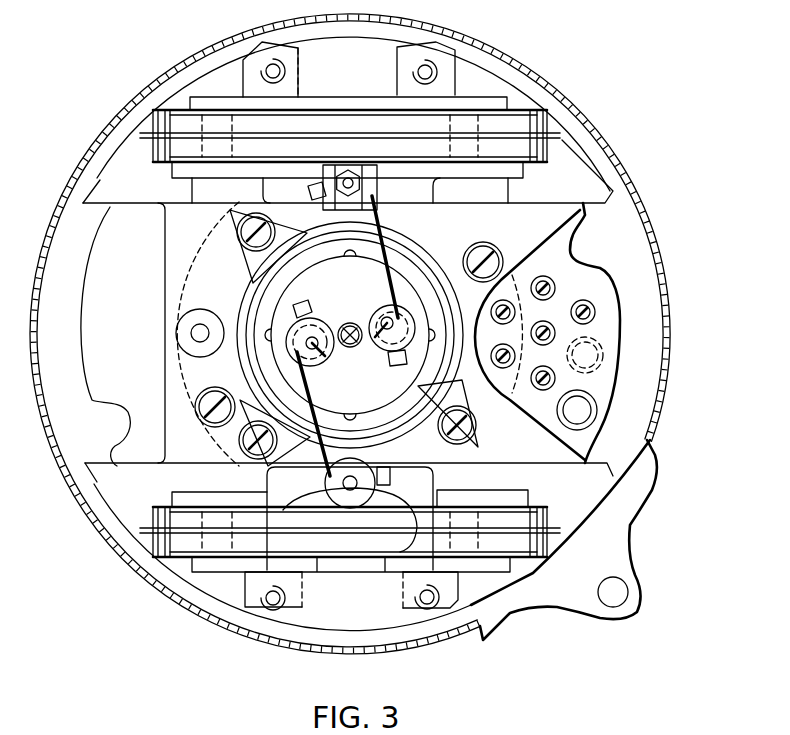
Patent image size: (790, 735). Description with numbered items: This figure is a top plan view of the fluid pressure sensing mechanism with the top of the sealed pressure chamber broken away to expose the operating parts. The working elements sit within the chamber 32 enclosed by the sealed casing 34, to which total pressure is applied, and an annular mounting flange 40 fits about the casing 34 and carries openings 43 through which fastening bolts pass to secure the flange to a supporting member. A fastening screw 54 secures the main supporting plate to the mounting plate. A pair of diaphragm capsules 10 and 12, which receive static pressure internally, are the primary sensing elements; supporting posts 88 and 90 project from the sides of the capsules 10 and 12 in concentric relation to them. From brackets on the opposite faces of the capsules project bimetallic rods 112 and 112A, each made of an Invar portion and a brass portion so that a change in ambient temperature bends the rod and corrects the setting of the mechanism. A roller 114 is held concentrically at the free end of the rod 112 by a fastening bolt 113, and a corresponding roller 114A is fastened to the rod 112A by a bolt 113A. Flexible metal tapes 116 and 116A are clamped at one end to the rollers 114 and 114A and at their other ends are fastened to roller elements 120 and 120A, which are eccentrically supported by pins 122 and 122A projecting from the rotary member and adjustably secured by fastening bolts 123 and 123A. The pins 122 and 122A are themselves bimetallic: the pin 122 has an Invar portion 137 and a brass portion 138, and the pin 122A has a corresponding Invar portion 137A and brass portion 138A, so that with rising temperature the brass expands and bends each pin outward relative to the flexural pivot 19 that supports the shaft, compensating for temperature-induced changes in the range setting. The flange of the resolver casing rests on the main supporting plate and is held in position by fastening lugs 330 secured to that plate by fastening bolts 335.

The diaphragm capsule 10 is at (150, 548).
The diaphragm capsule 12 is at (546, 122).
The flexural pivot element 19 is at (353, 314).
The chamber 32 is at (585, 181).
The sealed casing 34 is at (664, 250).
The annular mounting flange 40 is at (630, 530).
The opening 43 is at (615, 592).
The fastening screw 54 is at (490, 255).
The supporting post 88 is at (272, 612).
The supporting post 90 is at (262, 37).
The bimetallic rod 112 is at (348, 490).
The bimetallic rod 112A is at (357, 163).
The fastening bolt 113 is at (390, 478).
The fastening bolt 113A is at (318, 201).
The roller 114 is at (362, 466).
The roller 114A is at (350, 147).
The flexible metal tape 116 is at (300, 370).
The flexible metal tape 116A is at (396, 243).
The roller element 120 is at (324, 306).
The roller element 120A is at (386, 306).
The pin 122 is at (326, 356).
The pin 122A is at (376, 345).
The fastening bolt 123 is at (302, 302).
The fastening bolt 123A is at (404, 358).
The longitudinally extending portion 137 is at (300, 334).
The longitudinally extending portion 137A is at (393, 324).
The second longitudinally extending portion 138 is at (312, 362).
The second longitudinally extending portion 138A is at (400, 318).
The fastening lug 330 is at (243, 266).
The fastening bolt 335 is at (240, 236).